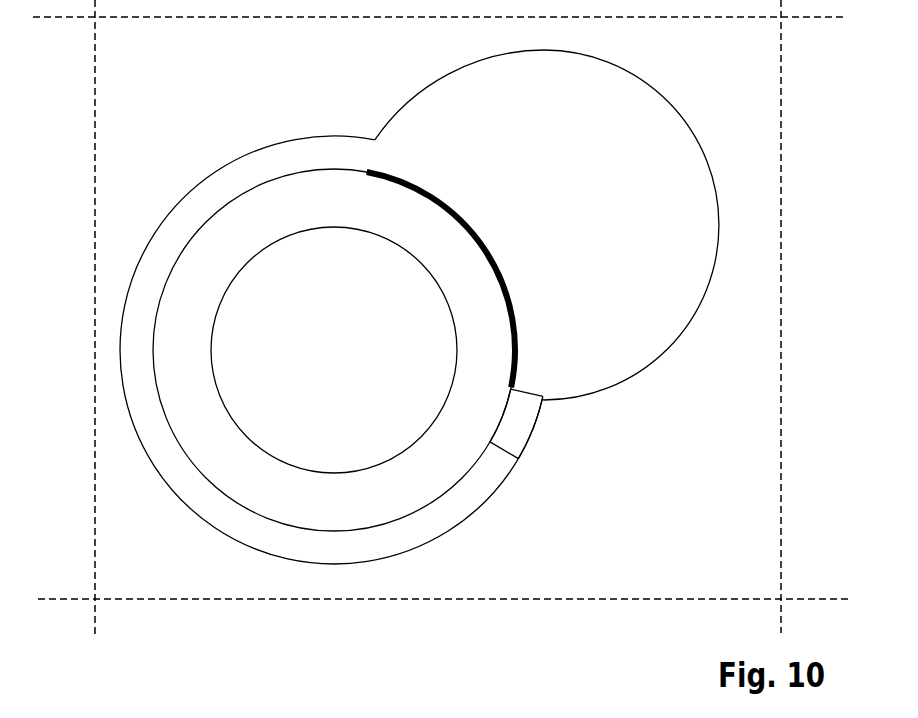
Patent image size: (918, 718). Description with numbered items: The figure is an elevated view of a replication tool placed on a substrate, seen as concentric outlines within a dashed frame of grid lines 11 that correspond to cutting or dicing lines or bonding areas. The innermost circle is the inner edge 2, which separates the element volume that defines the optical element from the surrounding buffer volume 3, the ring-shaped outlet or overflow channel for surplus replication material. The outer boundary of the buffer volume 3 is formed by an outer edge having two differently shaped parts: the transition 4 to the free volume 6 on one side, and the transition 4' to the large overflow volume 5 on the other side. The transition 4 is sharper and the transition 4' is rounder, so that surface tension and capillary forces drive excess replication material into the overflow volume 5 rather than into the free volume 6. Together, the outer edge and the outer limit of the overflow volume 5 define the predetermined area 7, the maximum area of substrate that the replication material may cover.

The inner edge 2 is at (429, 420).
The buffer volume 3 is at (438, 467).
The transition from buffer volume to free volume 4 is at (538, 466).
The transition from buffer volume to overflow volume 4' is at (492, 329).
The overflow volume 5 is at (648, 338).
The free volume 6 is at (433, 515).
The predetermined area 7 is at (233, 122).
The grid lines 11 is at (658, 593).